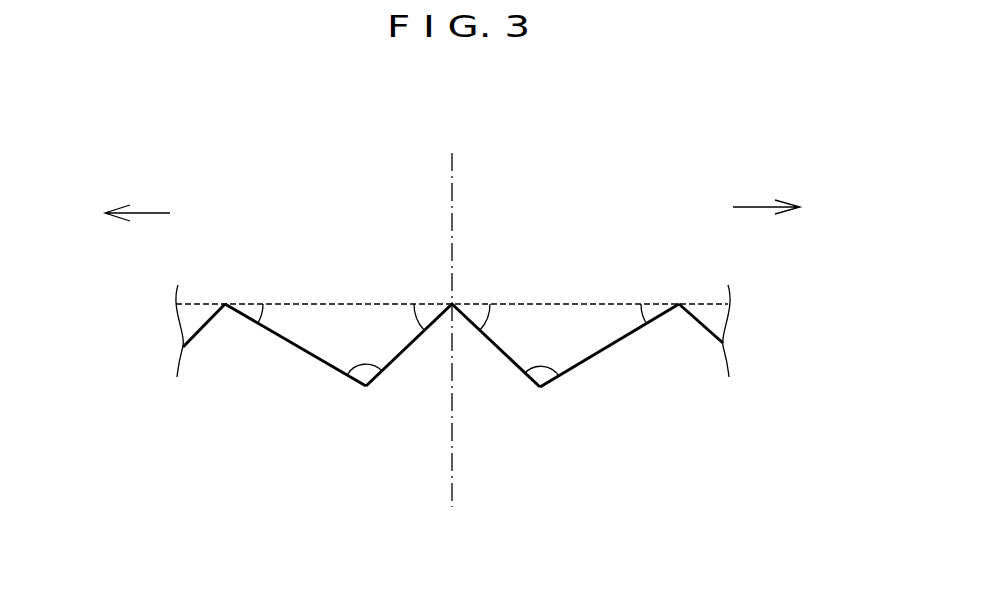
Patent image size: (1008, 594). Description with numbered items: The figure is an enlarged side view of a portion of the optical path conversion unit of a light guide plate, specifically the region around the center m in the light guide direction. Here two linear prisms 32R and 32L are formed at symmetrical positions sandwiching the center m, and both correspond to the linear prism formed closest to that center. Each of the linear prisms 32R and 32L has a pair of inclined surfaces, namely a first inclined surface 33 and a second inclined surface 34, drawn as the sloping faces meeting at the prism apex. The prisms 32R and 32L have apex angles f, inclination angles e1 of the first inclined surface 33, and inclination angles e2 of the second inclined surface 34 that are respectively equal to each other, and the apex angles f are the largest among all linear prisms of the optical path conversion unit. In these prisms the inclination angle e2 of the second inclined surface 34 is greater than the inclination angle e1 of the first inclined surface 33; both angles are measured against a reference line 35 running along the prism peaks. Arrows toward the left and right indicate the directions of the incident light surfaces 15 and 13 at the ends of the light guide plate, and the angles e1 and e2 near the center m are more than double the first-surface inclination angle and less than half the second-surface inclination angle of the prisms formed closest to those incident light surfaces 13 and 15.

The incident light surface 13 is at (785, 205).
The incident light surface 15 is at (119, 216).
The linear prism 32L is at (327, 343).
The linear prism 32R is at (578, 347).
The first inclined surface 33 is at (278, 335).
The second inclined surface 34 is at (413, 348).
The reference plane (peak line) 35 is at (562, 302).
The center in the light guide direction m is at (452, 187).
The inclination angle of the first inclined surface e1 is at (643, 317).
The inclination angle of the second inclined surface e2 is at (486, 328).
The apex angle f is at (453, 352).